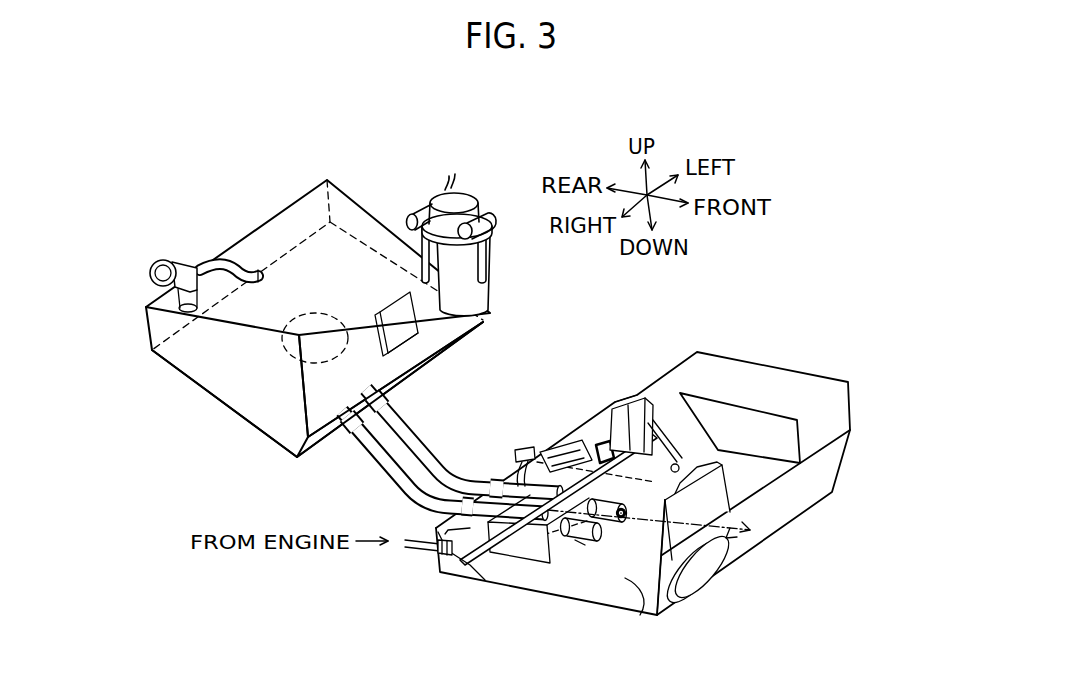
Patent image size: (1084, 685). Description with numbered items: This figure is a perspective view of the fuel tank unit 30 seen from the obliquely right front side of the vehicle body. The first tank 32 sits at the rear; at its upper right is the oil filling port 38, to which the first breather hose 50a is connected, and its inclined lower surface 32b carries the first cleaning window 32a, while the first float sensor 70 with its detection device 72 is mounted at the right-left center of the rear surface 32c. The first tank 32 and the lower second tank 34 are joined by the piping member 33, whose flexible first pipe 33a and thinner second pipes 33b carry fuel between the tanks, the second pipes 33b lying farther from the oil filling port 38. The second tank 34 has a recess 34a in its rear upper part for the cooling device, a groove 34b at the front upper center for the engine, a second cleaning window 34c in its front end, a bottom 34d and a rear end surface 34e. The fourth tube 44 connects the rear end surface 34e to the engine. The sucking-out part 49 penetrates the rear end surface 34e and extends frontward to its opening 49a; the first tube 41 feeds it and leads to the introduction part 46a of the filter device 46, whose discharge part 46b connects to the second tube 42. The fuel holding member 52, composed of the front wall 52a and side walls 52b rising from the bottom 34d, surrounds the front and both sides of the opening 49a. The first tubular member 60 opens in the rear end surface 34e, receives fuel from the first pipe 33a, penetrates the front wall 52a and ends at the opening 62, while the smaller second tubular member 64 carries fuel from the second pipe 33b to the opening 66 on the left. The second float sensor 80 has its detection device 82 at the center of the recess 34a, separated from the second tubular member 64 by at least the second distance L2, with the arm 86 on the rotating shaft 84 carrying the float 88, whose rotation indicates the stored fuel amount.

The fuel tank unit 30 is at (724, 330).
The first tank 32 is at (206, 397).
The first cleaning window 32a is at (296, 342).
The lower surface 32b is at (284, 458).
The rear surface 32c is at (330, 388).
The piping member 33 is at (455, 430).
The first pipe 33a is at (392, 450).
The second pipes 33b is at (435, 452).
The second tank 34 is at (643, 504).
The recess 34a is at (600, 410).
The groove 34b is at (748, 430).
The second cleaning window 34c is at (704, 585).
The bottom 34d is at (660, 603).
The rear end surface 34e is at (442, 528).
The oil filling port 38 is at (165, 262).
The first tube 41 is at (445, 231).
The second tube 42 is at (422, 232).
The fourth tube 44 is at (410, 546).
The filter device 46 is at (448, 196).
The introduction part 46a is at (486, 212).
The discharge part 46b is at (425, 208).
The sucking-out part 49 is at (550, 450).
The opening 49a is at (676, 465).
The first breather hose 50a is at (212, 263).
The fuel holding member 52 is at (547, 583).
The front wall 52a is at (578, 558).
The side walls 52b is at (518, 553).
The first tubular member 60 is at (625, 578).
The opening 62 is at (577, 543).
The second tubular member 64 is at (682, 518).
The opening 66 is at (622, 519).
The first float sensor 70 is at (376, 305).
The detection device 72 is at (396, 320).
The second float sensor 80 is at (654, 412).
The detection device 82 is at (600, 452).
The rotating shaft 84 is at (594, 477).
The arm 86 is at (662, 456).
The float 88 is at (722, 478).
The second distance L2 is at (737, 526).